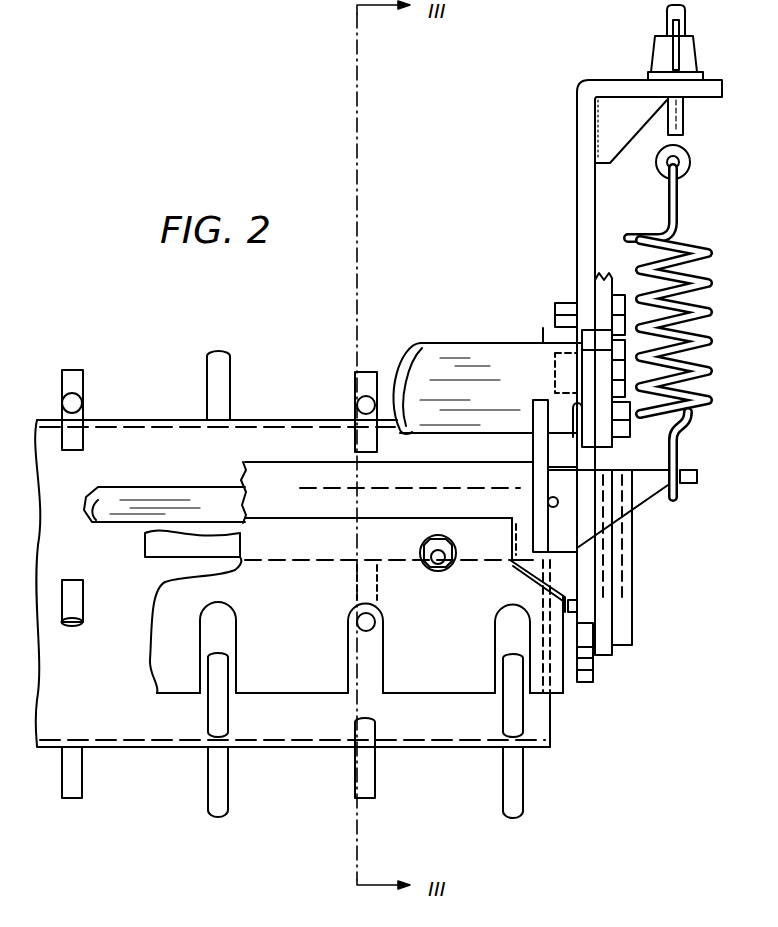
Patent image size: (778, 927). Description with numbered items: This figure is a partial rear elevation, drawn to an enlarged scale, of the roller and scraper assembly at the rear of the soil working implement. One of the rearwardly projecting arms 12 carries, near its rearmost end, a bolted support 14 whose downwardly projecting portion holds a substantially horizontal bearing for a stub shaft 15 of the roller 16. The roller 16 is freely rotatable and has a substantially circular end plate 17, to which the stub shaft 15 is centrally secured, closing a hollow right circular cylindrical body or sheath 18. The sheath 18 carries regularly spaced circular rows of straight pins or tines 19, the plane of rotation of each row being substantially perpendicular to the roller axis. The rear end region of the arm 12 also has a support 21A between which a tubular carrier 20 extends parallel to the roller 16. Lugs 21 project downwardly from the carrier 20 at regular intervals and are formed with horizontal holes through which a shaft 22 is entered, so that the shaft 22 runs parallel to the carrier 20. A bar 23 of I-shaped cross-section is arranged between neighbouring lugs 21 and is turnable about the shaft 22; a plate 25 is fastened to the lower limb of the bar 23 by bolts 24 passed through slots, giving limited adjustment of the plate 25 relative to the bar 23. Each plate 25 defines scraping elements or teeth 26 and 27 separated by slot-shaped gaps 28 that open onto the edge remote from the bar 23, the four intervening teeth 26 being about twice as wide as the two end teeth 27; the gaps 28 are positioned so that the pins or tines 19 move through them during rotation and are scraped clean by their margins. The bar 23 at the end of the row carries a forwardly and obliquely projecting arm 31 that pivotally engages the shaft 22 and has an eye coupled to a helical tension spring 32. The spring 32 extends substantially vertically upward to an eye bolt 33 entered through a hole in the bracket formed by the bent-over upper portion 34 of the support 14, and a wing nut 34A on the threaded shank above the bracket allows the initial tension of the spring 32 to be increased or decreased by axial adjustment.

The arm 12 is at (620, 262).
The support 14 is at (586, 684).
The stub shaft 15 is at (568, 582).
The roller 16 is at (156, 418).
The end plate 17 is at (550, 722).
The body or sheath 18 is at (430, 748).
The pin or tine 19 is at (355, 406).
The tubular carrier 20 is at (438, 342).
The lug 21 is at (540, 400).
The support 21A is at (548, 342).
The shaft 22 is at (130, 488).
The bar 23 is at (300, 462).
The bolt 24 is at (440, 572).
The plate 25 is at (156, 616).
The scraping element or tooth 26 is at (172, 693).
The scraping element or tooth 27 is at (563, 695).
The slot-shaped gap 28 is at (236, 627).
The arm 31 is at (648, 500).
The helical tension spring 32 is at (650, 238).
The eye bolt 33 is at (683, 127).
The upper portion 34 is at (577, 200).
The wing nut 34A is at (652, 52).